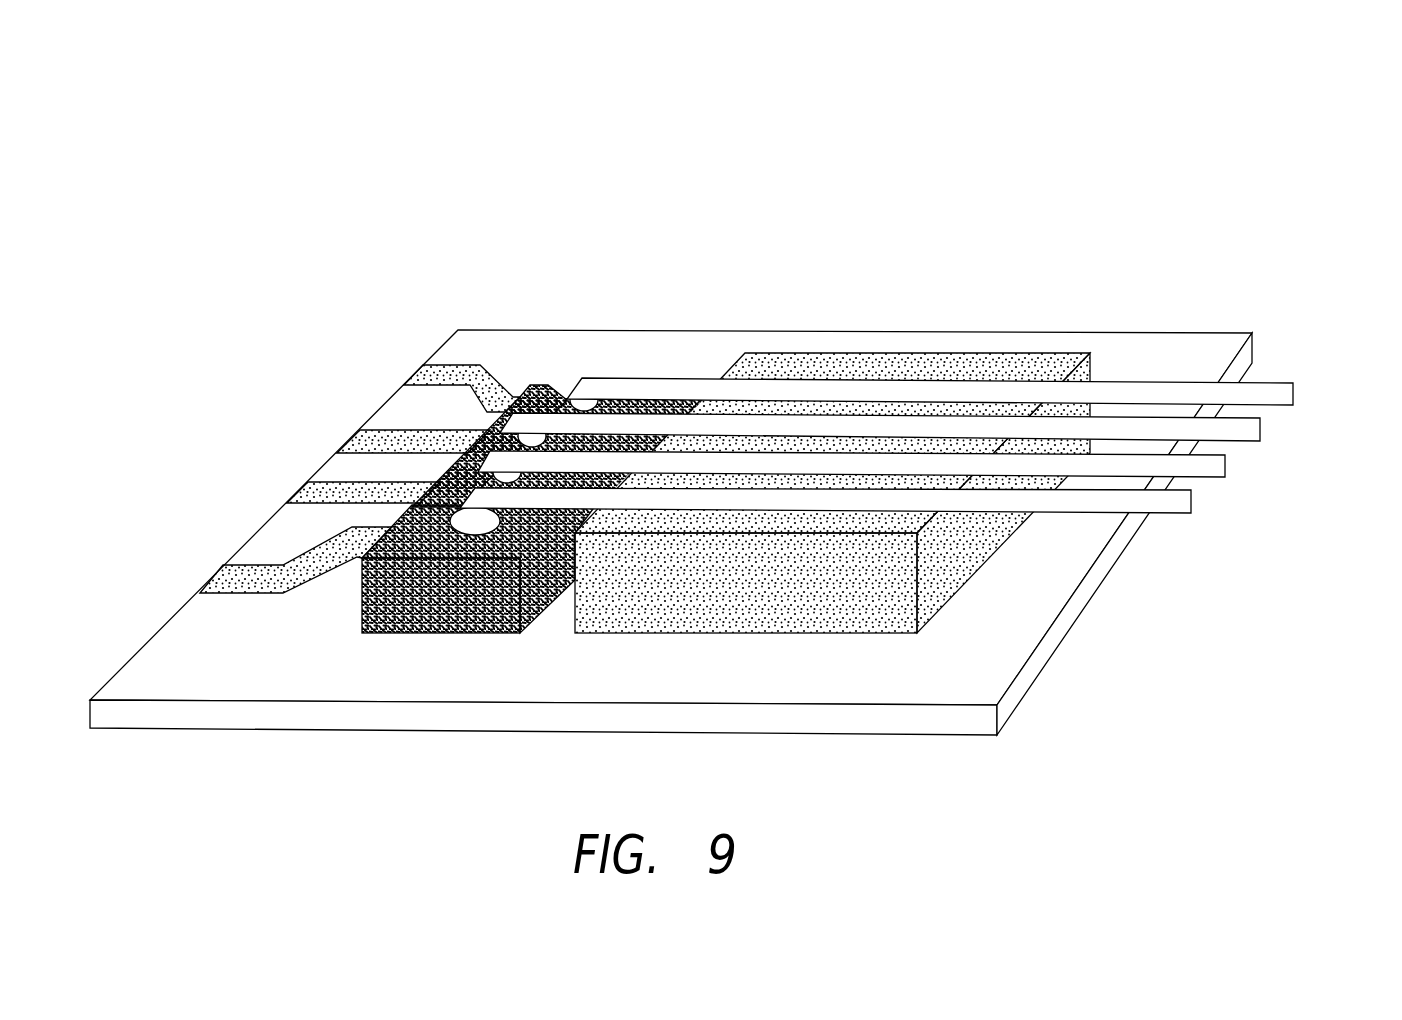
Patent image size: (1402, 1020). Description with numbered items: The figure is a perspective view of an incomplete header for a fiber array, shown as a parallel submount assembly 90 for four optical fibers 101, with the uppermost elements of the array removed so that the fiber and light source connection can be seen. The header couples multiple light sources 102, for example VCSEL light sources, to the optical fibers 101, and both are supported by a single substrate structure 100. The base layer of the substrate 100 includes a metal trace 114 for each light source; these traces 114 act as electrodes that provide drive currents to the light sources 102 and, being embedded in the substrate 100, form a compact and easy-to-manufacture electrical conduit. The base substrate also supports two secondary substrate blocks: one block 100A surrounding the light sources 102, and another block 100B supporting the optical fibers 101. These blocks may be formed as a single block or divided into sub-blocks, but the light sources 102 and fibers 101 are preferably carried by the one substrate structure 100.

The parallel submount assembly 90 is at (734, 455).
The substrate 100 is at (959, 687).
The secondary substrate block 100A is at (423, 620).
The secondary substrate block 100B is at (806, 582).
The optical fibers 101 is at (1180, 503).
The light source module 102 is at (547, 383).
The metal trace 114 is at (440, 372).